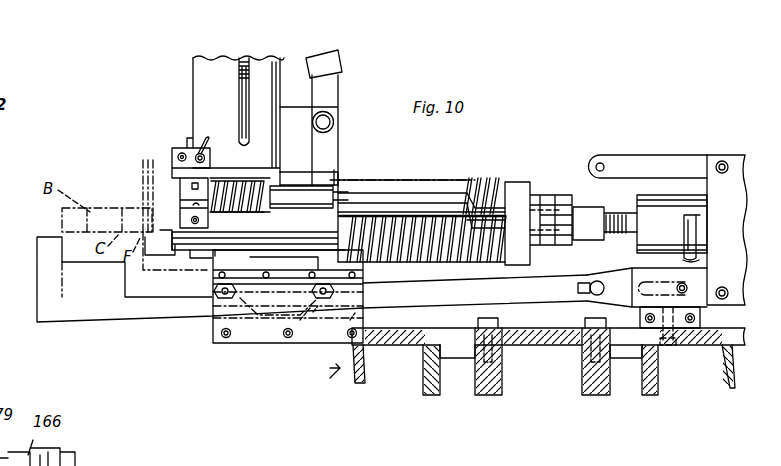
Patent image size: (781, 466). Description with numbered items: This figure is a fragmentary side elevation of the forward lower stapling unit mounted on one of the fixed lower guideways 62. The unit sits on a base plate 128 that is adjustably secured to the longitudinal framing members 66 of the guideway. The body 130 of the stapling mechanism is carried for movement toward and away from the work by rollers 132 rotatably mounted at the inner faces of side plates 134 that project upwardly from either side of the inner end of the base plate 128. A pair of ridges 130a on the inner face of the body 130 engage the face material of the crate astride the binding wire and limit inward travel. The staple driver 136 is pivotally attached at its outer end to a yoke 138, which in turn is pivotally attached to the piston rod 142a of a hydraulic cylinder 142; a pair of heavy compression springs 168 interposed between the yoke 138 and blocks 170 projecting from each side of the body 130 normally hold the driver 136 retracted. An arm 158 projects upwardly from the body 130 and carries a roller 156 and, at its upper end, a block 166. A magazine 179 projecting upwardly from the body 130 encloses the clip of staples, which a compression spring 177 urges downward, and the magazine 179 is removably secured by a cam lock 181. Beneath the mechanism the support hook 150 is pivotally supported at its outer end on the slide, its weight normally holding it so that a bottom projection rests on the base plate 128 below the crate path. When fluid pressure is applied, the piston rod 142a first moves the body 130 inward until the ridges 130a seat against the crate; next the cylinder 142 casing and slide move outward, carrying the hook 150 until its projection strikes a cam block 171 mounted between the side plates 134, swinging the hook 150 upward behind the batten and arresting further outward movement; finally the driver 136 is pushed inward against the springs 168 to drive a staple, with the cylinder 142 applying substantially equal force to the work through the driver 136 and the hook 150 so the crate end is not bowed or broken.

The fixed lower guideway 62 is at (338, 368).
The longitudinal framing member 66 is at (350, 350).
The base plate 128 is at (516, 336).
The body 130 is at (178, 193).
The ridges 130a is at (178, 212).
The rollers 132 is at (214, 291).
The side plates 134 is at (212, 332).
The staple driver 136 is at (352, 212).
The yoke 138 is at (528, 186).
The hydraulic cylinder 142 is at (697, 200).
The piston rod 142a is at (606, 218).
The support hook 150 is at (165, 318).
The roller 156 is at (334, 122).
The arm 158 is at (339, 95).
The block 166 is at (336, 60).
The compression springs 168 is at (476, 186).
The blocks 170 is at (178, 175).
The cam block 171 is at (364, 318).
The compression spring 177 is at (238, 72).
The magazine 179 is at (193, 92).
The cam lock 181 is at (205, 160).